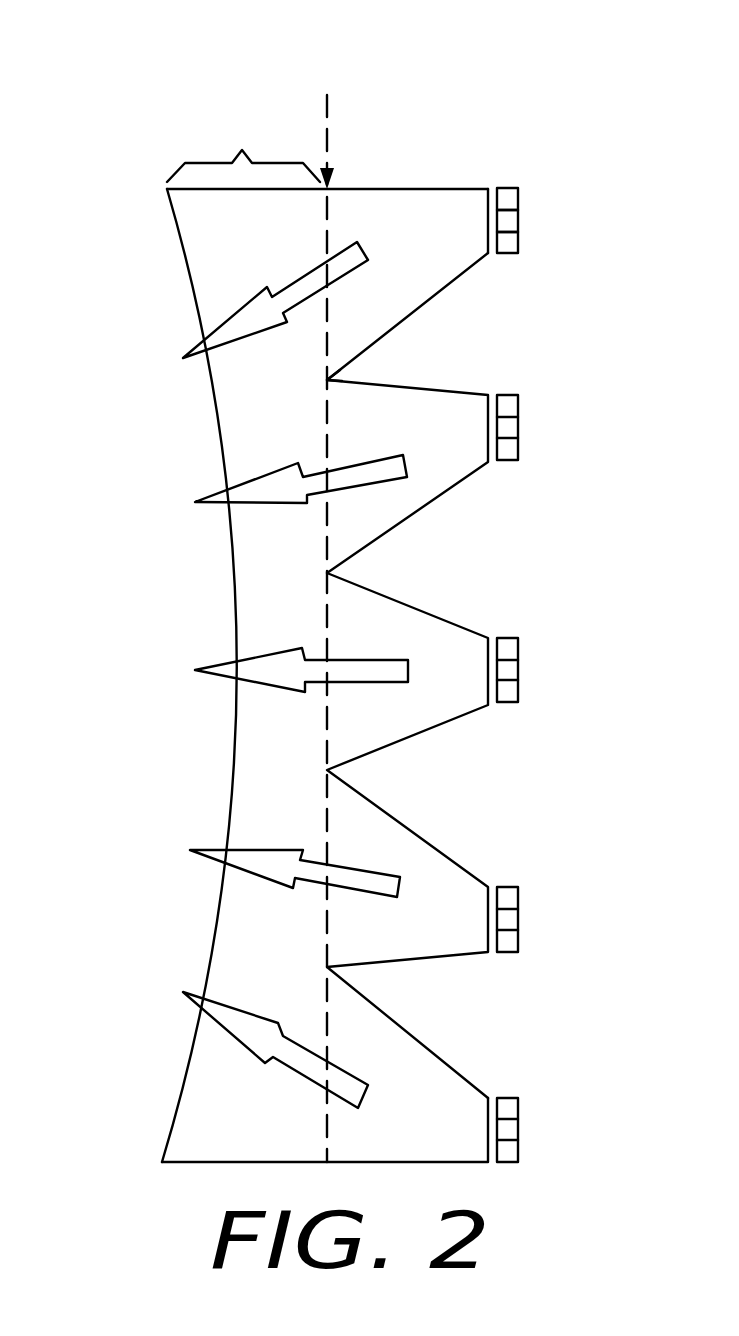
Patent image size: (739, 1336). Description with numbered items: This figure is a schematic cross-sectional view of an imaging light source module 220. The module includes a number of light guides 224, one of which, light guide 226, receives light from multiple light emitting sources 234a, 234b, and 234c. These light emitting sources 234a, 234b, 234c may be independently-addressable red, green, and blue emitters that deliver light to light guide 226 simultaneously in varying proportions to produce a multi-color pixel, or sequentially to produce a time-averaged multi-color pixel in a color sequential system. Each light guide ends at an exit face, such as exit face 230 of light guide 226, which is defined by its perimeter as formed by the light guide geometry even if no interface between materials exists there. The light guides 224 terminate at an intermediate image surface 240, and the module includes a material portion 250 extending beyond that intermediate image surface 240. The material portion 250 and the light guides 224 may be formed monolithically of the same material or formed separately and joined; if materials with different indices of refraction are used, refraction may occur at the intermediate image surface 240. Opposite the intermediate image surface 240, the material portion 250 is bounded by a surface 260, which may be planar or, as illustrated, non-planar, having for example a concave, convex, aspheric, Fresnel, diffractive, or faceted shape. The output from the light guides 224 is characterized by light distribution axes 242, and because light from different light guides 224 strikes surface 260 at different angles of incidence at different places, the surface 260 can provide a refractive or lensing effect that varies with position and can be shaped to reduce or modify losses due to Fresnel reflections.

The imaging light source module 220 is at (172, 68).
The light guides 224 is at (435, 935).
The light guide 226 is at (452, 205).
The exit face 230 is at (327, 338).
The light emitting source 234a is at (520, 198).
The light emitting source 234b is at (520, 221).
The light emitting source 234c is at (520, 240).
The intermediate image surface 240 is at (328, 132).
The light distribution axes 242 is at (268, 672).
The material portion 250 is at (243, 138).
The surface 260 is at (190, 285).